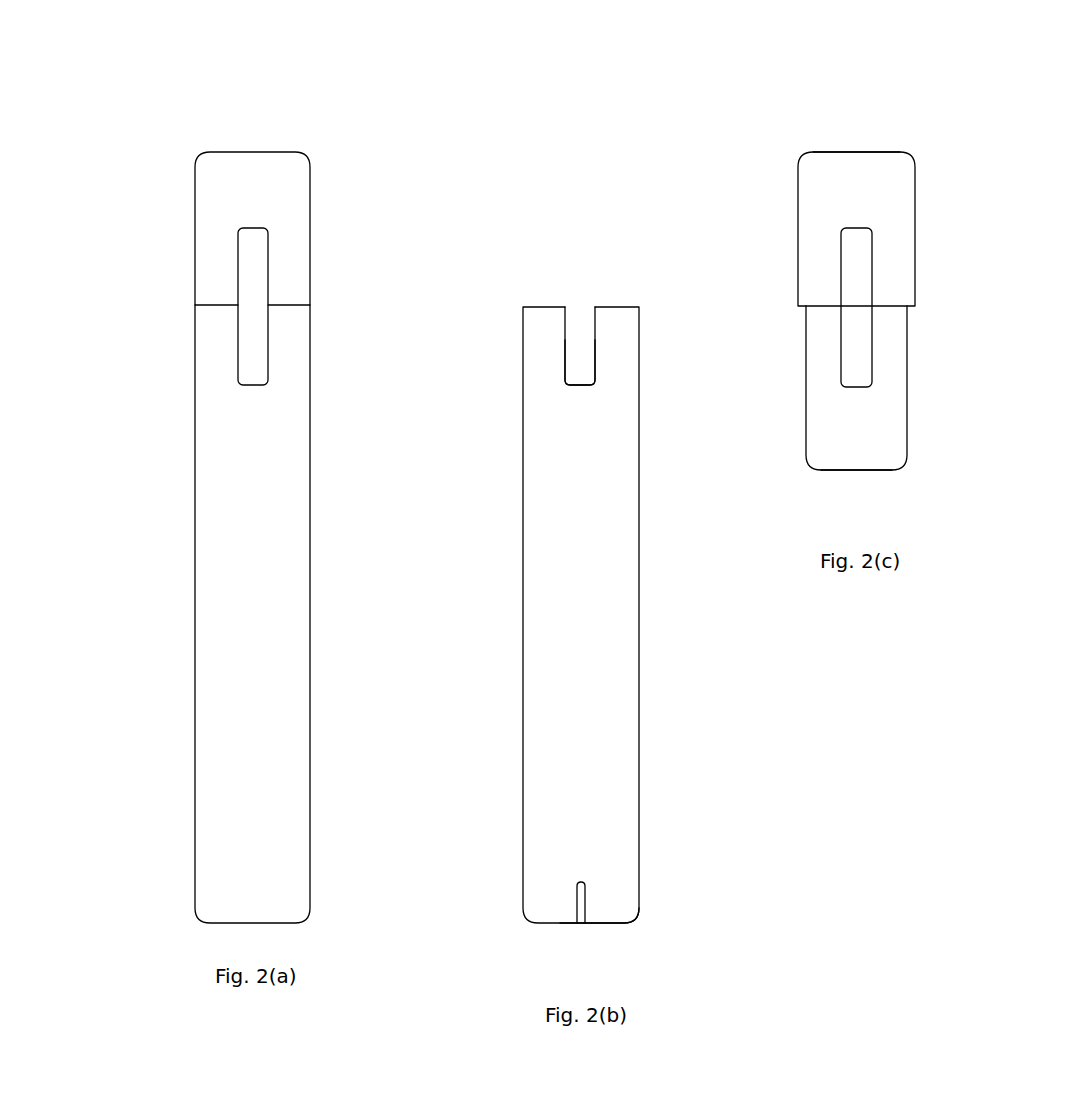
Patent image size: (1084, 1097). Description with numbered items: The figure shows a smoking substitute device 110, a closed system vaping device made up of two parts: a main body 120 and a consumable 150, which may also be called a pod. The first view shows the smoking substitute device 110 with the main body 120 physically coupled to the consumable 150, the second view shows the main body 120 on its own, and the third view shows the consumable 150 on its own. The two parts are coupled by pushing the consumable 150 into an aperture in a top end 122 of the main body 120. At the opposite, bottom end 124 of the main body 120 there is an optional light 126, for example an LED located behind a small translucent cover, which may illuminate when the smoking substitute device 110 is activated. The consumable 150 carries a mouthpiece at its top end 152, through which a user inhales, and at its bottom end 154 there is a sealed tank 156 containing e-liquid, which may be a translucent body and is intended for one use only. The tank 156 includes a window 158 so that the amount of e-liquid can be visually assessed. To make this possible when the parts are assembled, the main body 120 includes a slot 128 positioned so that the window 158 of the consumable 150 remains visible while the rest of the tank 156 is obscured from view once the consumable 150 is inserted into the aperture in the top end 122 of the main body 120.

In FIG. 2A, the smoking substitute device 110 is at (168, 87).
In FIG. 2A, the main body 120 is at (192, 622).
In FIG. 2B, the main body 120 is at (522, 630).
In FIG. 2B, the top end of the main body 122 is at (584, 302).
In FIG. 2B, the bottom end of the main body 124 is at (600, 929).
In FIG. 2B, the light 126 is at (575, 905).
In FIG. 2B, the slot 128 is at (578, 344).
In FIG. 2A, the consumable 150 is at (197, 222).
In FIG. 2C, the consumable 150 is at (798, 177).
In FIG. 2C, the top end of the consumable 152 is at (867, 139).
In FIG. 2C, the bottom end of the consumable 154 is at (869, 476).
In FIG. 2C, the tank 156 is at (847, 434).
In FIG. 2C, the window 158 is at (862, 285).